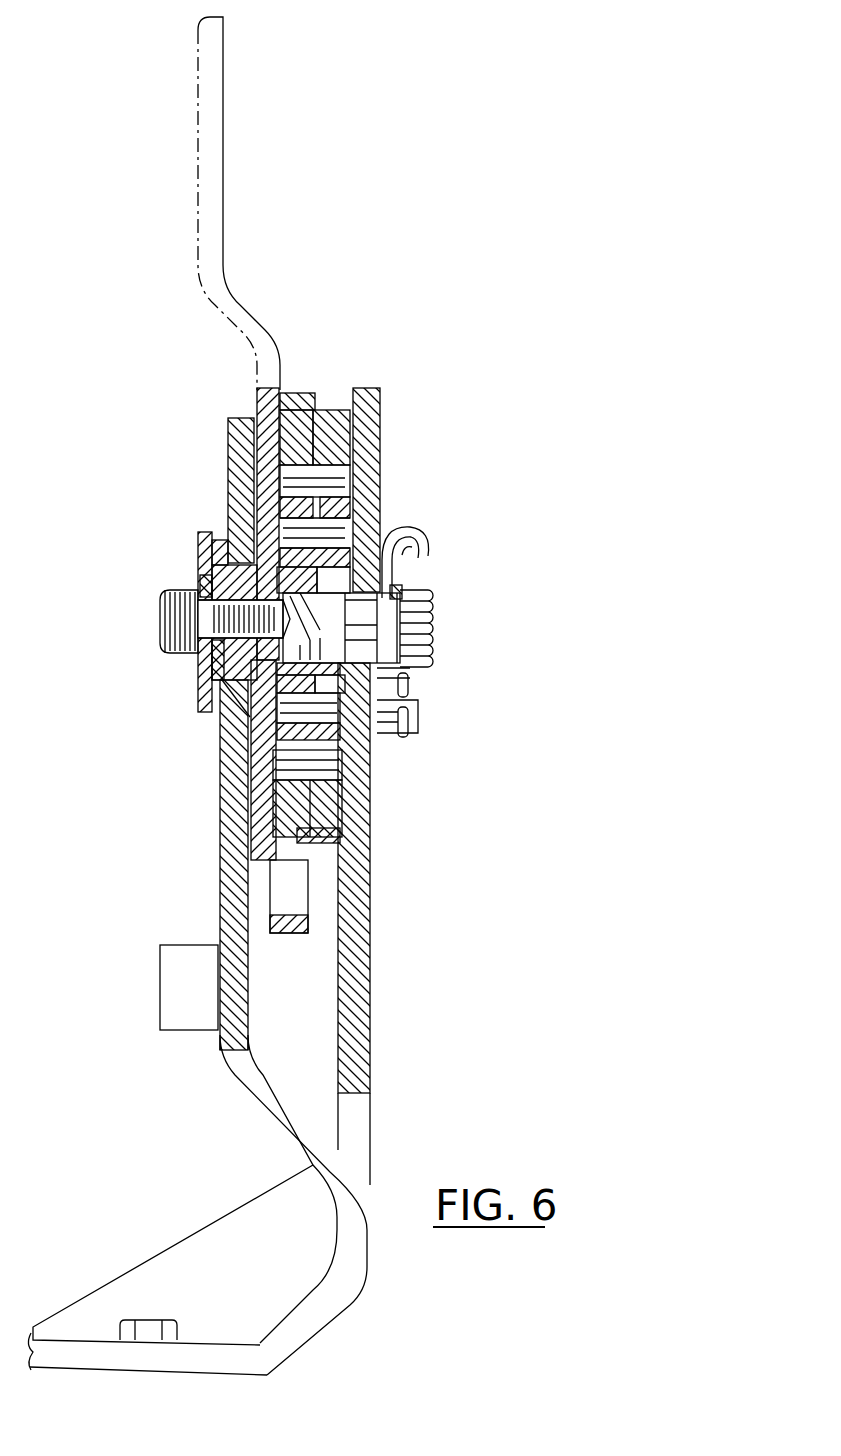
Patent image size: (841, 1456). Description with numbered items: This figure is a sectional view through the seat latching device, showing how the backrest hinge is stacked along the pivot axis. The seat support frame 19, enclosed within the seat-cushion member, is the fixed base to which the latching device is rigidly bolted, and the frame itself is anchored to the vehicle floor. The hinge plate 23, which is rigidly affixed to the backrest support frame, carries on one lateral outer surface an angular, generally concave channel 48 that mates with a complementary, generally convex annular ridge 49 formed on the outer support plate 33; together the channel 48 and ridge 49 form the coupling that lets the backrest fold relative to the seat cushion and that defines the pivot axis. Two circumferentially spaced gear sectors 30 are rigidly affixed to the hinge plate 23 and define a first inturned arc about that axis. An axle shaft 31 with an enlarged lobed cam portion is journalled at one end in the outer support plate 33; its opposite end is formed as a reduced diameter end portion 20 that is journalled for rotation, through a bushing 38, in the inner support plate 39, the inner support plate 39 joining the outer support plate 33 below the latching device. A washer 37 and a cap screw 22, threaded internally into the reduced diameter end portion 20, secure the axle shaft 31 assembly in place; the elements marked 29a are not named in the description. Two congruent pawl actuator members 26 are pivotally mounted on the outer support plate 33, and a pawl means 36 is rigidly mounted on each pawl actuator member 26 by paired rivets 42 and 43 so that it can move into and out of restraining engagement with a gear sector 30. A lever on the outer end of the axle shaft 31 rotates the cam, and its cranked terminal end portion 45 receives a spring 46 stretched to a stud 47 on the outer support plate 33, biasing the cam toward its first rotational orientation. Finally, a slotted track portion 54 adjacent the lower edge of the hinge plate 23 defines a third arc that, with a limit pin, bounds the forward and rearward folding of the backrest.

The seat support frame 19 is at (168, 969).
The reduced diameter end portion 20 is at (200, 672).
The cap screw 22 is at (160, 628).
The hinge plate 23 is at (212, 222).
The pawl actuator member 26 is at (275, 508).
The washer 29a is at (200, 577).
The gear sector 30 is at (385, 555).
The axle shaft 31 is at (347, 607).
The outer support plate 33 is at (380, 419).
The pawl means 36 is at (352, 728).
The washer 37 is at (200, 551).
The bushing 38 is at (222, 530).
The inner support plate 39 is at (228, 431).
The rivet 42 is at (352, 478).
The rivet 43 is at (352, 520).
The cranked terminal end portion 45 is at (397, 570).
The spring 46 is at (432, 628).
The stud 47 is at (418, 702).
The concave channel 48 is at (318, 438).
The convex annular ridge 49 is at (340, 395).
The slotted track portion 54 is at (300, 897).